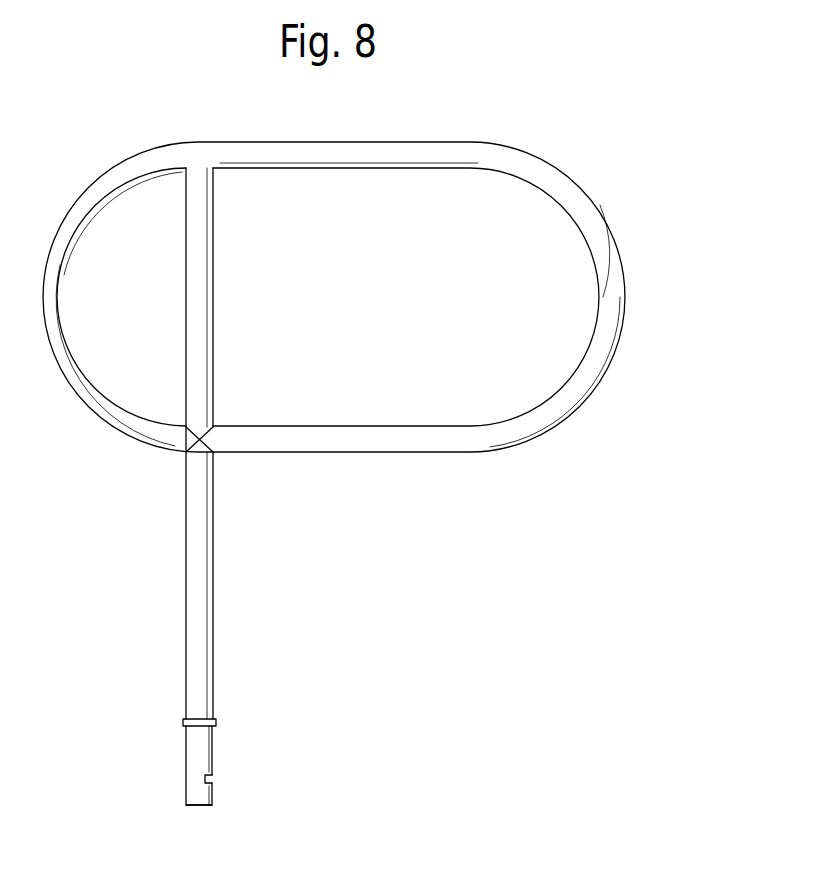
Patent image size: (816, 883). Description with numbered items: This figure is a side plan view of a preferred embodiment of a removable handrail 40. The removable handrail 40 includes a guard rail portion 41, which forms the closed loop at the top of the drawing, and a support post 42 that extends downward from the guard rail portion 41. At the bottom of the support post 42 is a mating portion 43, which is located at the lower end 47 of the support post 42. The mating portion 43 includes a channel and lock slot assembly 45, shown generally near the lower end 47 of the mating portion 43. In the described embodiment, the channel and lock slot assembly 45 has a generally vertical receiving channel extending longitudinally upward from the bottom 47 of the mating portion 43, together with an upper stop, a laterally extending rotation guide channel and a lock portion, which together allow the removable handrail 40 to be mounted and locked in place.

The removable handrail 40 is at (515, 131).
The guard rail portion 41 is at (613, 309).
The support post 42 is at (200, 580).
The mating portion 43 is at (190, 766).
The channel and lock slot assembly 45 is at (216, 778).
The lower end 47 is at (200, 807).